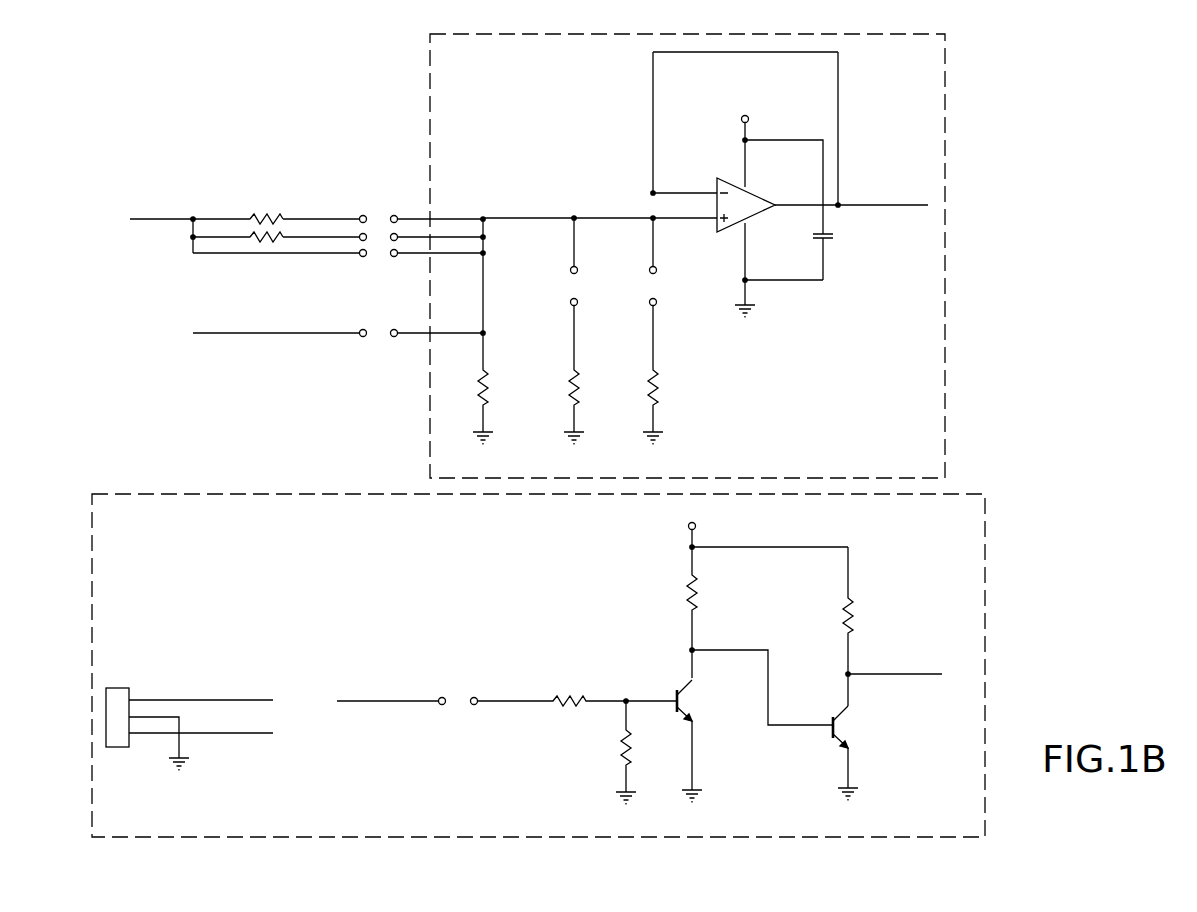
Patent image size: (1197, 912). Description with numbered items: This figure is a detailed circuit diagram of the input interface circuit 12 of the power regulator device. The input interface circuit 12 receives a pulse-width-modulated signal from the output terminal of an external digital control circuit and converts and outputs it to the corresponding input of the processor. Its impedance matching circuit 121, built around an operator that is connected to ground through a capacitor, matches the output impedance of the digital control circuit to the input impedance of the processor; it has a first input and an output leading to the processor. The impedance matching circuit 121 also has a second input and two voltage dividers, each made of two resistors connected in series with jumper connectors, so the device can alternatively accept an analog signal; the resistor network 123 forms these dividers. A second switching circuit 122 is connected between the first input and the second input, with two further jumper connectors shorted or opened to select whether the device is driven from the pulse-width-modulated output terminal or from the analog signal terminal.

The input interface circuit 12 is at (1000, 173).
The impedance matching circuit 121 is at (945, 312).
The second switching circuit 122 is at (985, 585).
The voltage dividing resistor network 123 is at (262, 210).